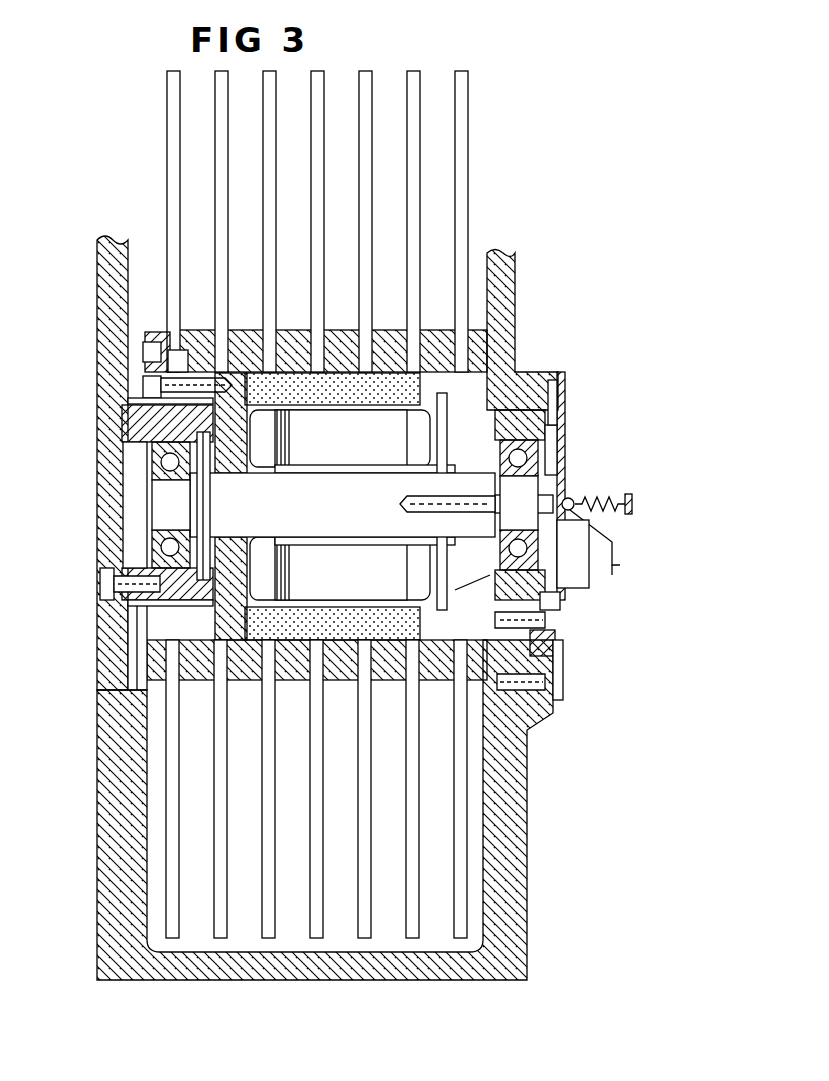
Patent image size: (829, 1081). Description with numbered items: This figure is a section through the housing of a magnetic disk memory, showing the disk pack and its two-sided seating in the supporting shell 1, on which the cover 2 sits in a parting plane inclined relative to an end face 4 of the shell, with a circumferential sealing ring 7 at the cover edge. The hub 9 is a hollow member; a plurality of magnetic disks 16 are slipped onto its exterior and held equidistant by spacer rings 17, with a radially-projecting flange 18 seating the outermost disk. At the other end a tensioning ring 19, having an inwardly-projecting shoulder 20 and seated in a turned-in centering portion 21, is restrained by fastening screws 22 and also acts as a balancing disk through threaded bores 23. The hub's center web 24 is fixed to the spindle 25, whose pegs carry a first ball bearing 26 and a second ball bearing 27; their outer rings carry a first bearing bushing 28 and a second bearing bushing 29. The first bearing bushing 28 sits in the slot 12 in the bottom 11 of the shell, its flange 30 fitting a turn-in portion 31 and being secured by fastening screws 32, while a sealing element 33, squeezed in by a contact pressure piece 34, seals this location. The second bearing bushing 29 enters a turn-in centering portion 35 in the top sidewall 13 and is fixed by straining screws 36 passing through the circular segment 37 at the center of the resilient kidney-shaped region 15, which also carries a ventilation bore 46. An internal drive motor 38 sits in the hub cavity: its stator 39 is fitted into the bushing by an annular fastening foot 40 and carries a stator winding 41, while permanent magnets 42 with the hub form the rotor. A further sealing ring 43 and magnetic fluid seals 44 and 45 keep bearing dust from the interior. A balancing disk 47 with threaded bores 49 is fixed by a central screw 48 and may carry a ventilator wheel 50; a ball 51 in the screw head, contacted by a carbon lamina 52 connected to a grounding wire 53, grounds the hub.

The supporting shell 1 is at (97, 920).
The cover 2 is at (97, 256).
The end face 4 is at (288, 962).
The circumferential sealing ring 7 is at (140, 401).
The hub 9 is at (392, 345).
The bottom of the supporting shell 11 is at (513, 840).
The slot 12 is at (505, 600).
The top sidewall 13 is at (108, 844).
The kidney-shaped region 15 is at (135, 650).
The magnetic disks 16 is at (268, 172).
The spacer rings 17 is at (238, 345).
The radially-projecting flange 18 is at (483, 332).
The tensioning ring 19 is at (158, 345).
The inwardly-projecting shoulder 20 is at (125, 420).
The centering portion 21 is at (178, 345).
The fastening screws 22 is at (150, 385).
The threaded bores 23 is at (150, 352).
The center web 24 is at (240, 580).
The spindle 25 is at (342, 528).
The first ball bearing 26 is at (545, 450).
The second ball bearing 27 is at (190, 486).
The first bearing bushing 28 is at (562, 420).
The second bearing bushing 29 is at (150, 460).
The flange 30 is at (560, 604).
The turn-in portion 31 is at (548, 622).
The fastening screws 32 is at (556, 645).
The sealing element 33 is at (556, 677).
The contact pressure piece 34 is at (556, 700).
The turn-in centering portion 35 is at (130, 488).
The straining screws 36 is at (100, 582).
The circular segment 37 is at (105, 542).
The drive motor 38 is at (310, 460).
The stator 39 is at (392, 468).
The annular fastening foot 40 is at (455, 478).
The stator winding 41 is at (353, 460).
The permanent magnets 42 is at (332, 385).
The sealing ring 43 is at (135, 606).
The magnetic fluid seal 44 is at (470, 545).
The magnetic fluid seal 45 is at (196, 518).
The ventilation bore 46 is at (105, 506).
The balancing disk 47 is at (560, 395).
The central screw 48 is at (455, 512).
The threaded bores 49 is at (560, 440).
The ventilator wheel 50 is at (585, 580).
The ball 51 is at (614, 540).
The carbon lamina 52 is at (575, 498).
The grounding wire 53 is at (616, 572).